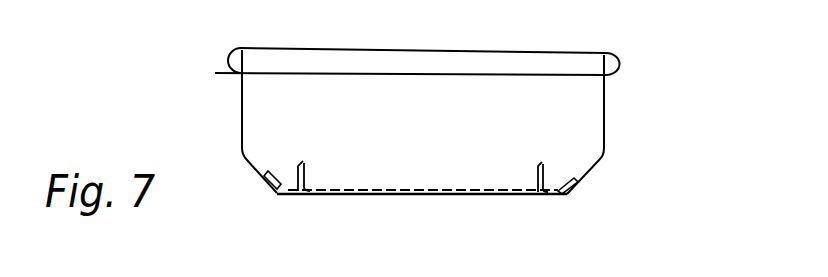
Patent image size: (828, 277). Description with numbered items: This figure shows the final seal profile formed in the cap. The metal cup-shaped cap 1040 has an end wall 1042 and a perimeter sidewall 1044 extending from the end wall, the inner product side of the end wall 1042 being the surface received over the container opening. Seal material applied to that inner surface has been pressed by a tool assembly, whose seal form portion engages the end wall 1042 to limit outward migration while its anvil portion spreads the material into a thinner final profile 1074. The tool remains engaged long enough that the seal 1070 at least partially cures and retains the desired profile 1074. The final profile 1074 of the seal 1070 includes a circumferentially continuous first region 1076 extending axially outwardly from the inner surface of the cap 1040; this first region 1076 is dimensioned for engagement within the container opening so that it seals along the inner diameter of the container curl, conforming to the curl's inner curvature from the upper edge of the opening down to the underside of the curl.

The cap 1040 is at (198, 107).
The end wall 1042 is at (394, 196).
The perimeter sidewall 1044 is at (605, 112).
The seal 1070 is at (322, 166).
The final profile 1074 is at (463, 187).
The first region 1076 is at (538, 165).